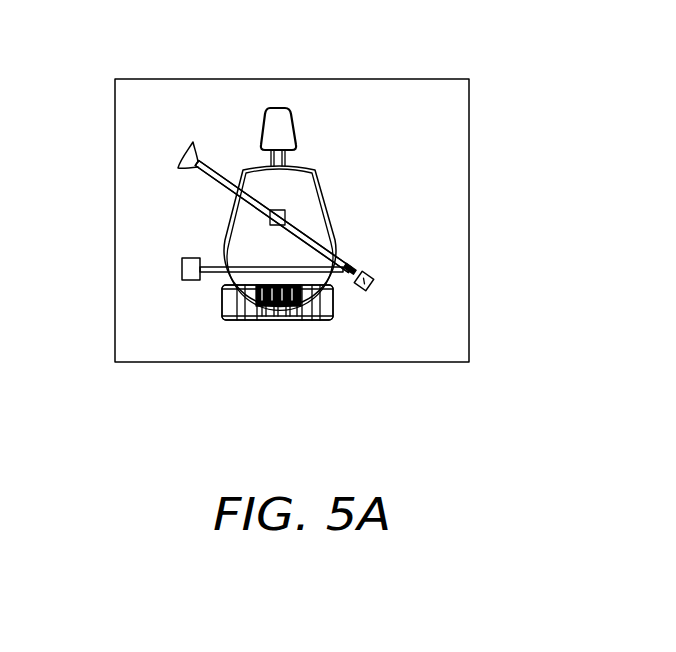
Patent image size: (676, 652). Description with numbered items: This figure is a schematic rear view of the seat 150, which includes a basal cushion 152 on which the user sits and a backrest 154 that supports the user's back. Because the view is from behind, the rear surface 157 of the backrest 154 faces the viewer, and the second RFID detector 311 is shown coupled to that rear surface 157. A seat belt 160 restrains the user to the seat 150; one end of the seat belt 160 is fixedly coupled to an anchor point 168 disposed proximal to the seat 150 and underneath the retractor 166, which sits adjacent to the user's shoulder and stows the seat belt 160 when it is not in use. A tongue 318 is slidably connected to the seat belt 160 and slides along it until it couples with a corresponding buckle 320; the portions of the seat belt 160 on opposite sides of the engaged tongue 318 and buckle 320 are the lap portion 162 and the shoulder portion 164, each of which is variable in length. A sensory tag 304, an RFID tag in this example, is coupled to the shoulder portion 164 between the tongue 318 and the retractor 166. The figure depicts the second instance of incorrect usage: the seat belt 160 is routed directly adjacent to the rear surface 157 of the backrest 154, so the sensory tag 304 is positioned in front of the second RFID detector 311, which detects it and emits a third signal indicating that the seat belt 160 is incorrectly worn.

The seat 150 is at (345, 118).
The basal cushion 152 is at (312, 328).
The backrest 154 is at (343, 232).
The rear surface 157 is at (305, 200).
The seat belt 160 is at (203, 178).
The lap portion 162 is at (211, 278).
The shoulder portion 164 is at (220, 172).
The retractor 166 is at (192, 161).
The anchor point 168 is at (182, 271).
The sensory tag 304 is at (250, 250).
The second RFID detector 311 is at (285, 212).
The tongue 318 is at (352, 270).
The buckle 320 is at (372, 285).